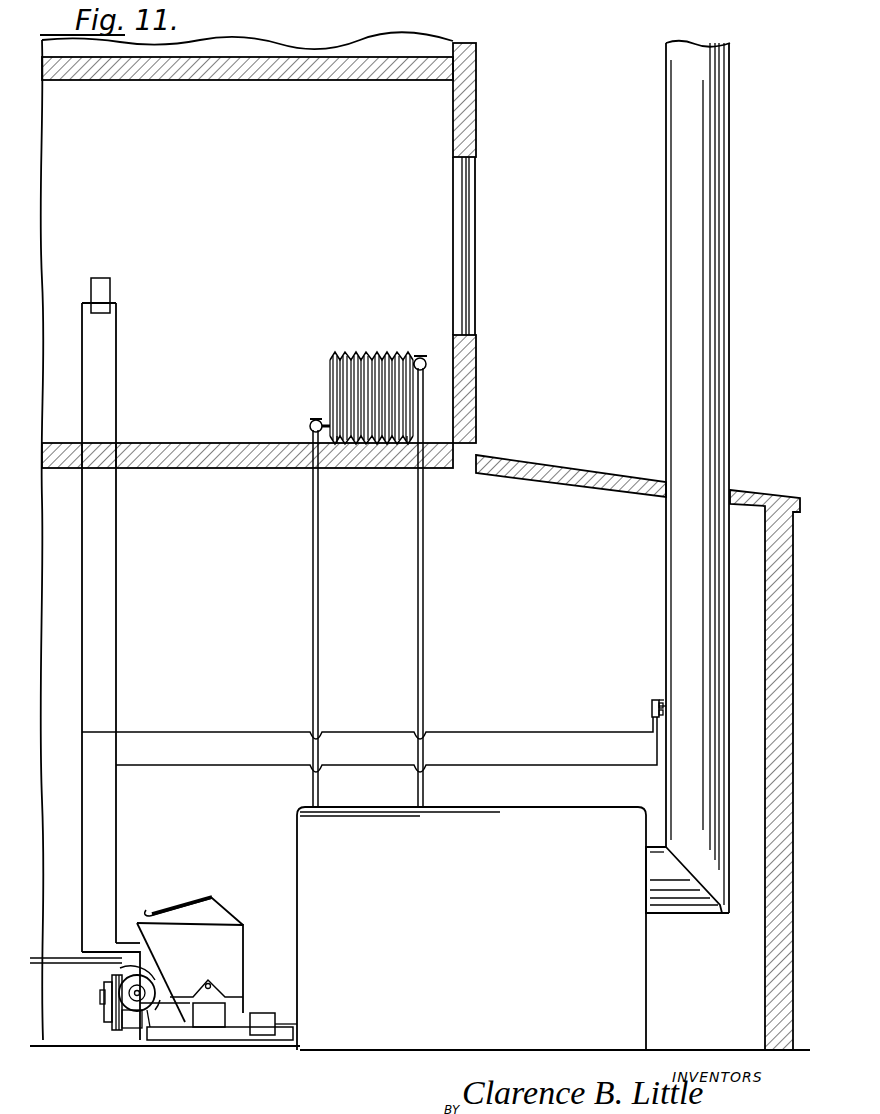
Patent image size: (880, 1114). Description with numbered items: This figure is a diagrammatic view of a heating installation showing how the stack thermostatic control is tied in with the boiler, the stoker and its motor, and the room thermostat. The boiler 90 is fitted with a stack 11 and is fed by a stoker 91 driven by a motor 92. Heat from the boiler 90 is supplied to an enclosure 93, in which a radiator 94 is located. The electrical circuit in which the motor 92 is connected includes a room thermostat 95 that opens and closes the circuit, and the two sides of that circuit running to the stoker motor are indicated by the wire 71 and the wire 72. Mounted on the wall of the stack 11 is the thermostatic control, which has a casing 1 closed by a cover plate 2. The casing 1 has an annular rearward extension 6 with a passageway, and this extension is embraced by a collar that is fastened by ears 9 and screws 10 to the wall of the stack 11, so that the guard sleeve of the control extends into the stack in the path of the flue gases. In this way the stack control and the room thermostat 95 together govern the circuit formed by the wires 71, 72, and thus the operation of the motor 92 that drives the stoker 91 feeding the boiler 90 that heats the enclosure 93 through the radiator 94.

The casing 1 is at (648, 708).
The cover plate 2 is at (650, 717).
The annular rearward extension 6 is at (663, 707).
The ears 9 is at (658, 701).
The screws 10 is at (655, 702).
The stack 11 is at (676, 583).
The wire 71 is at (82, 842).
The wire 72 is at (118, 835).
The boiler 90 is at (483, 914).
The stoker 91 is at (208, 1014).
The motor 92 is at (133, 1002).
The enclosure 93 is at (278, 192).
The radiator 94 is at (343, 372).
The room thermostat 95 is at (103, 309).